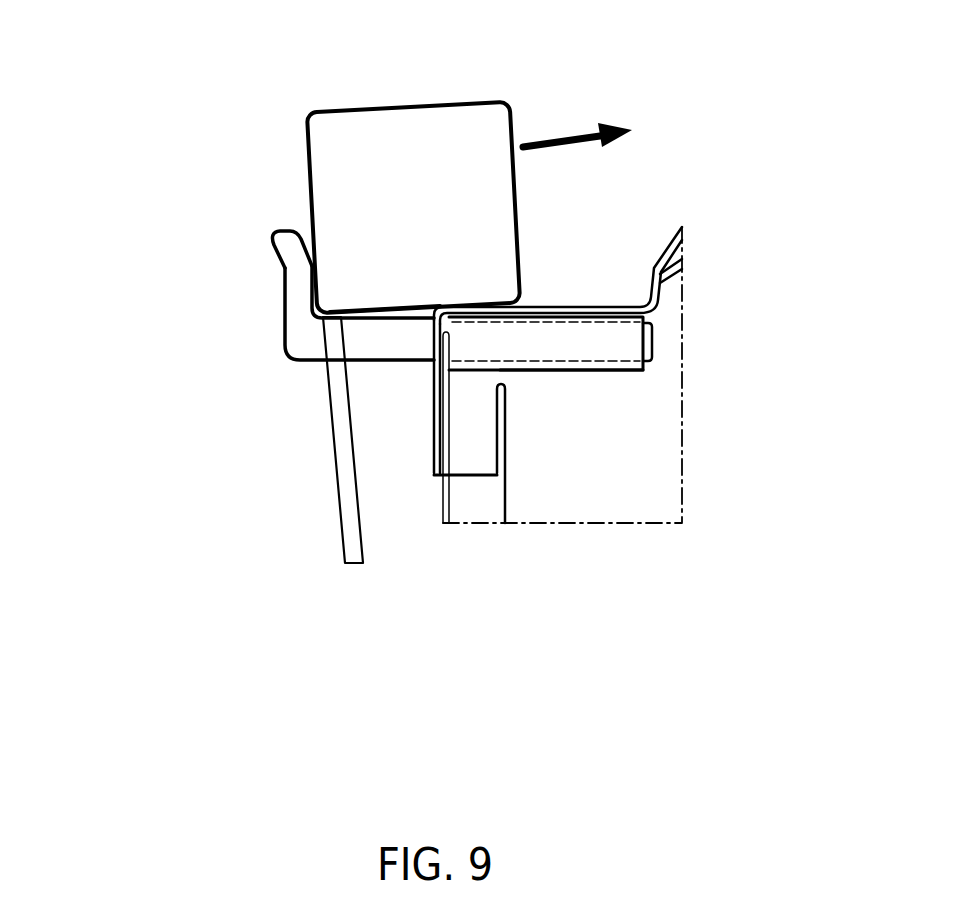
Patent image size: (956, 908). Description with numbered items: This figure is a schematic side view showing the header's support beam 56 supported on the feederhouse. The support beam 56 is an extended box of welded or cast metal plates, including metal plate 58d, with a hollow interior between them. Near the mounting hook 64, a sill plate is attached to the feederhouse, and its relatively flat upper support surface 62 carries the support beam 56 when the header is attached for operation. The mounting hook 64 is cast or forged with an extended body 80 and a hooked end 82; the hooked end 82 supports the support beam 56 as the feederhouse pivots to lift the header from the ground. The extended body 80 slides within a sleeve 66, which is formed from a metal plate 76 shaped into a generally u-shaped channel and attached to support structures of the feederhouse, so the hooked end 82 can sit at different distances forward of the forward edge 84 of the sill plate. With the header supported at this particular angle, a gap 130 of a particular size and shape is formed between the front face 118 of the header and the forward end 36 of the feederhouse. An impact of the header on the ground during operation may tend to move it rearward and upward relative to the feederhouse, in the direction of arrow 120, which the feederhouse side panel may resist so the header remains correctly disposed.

The support beam 56 is at (272, 160).
The metal plate 58d is at (385, 310).
The arrow 120 is at (583, 135).
The upper support surface 62 is at (557, 305).
The hooked end 82 is at (283, 285).
The mounting hook 64 is at (255, 348).
The sleeve 66 is at (660, 363).
The metal plate 76 is at (573, 370).
The extended body 80 is at (545, 362).
The forward edge 84 is at (433, 407).
The forward end 36 is at (413, 498).
The front face 118 is at (357, 483).
The gap 130 is at (365, 402).